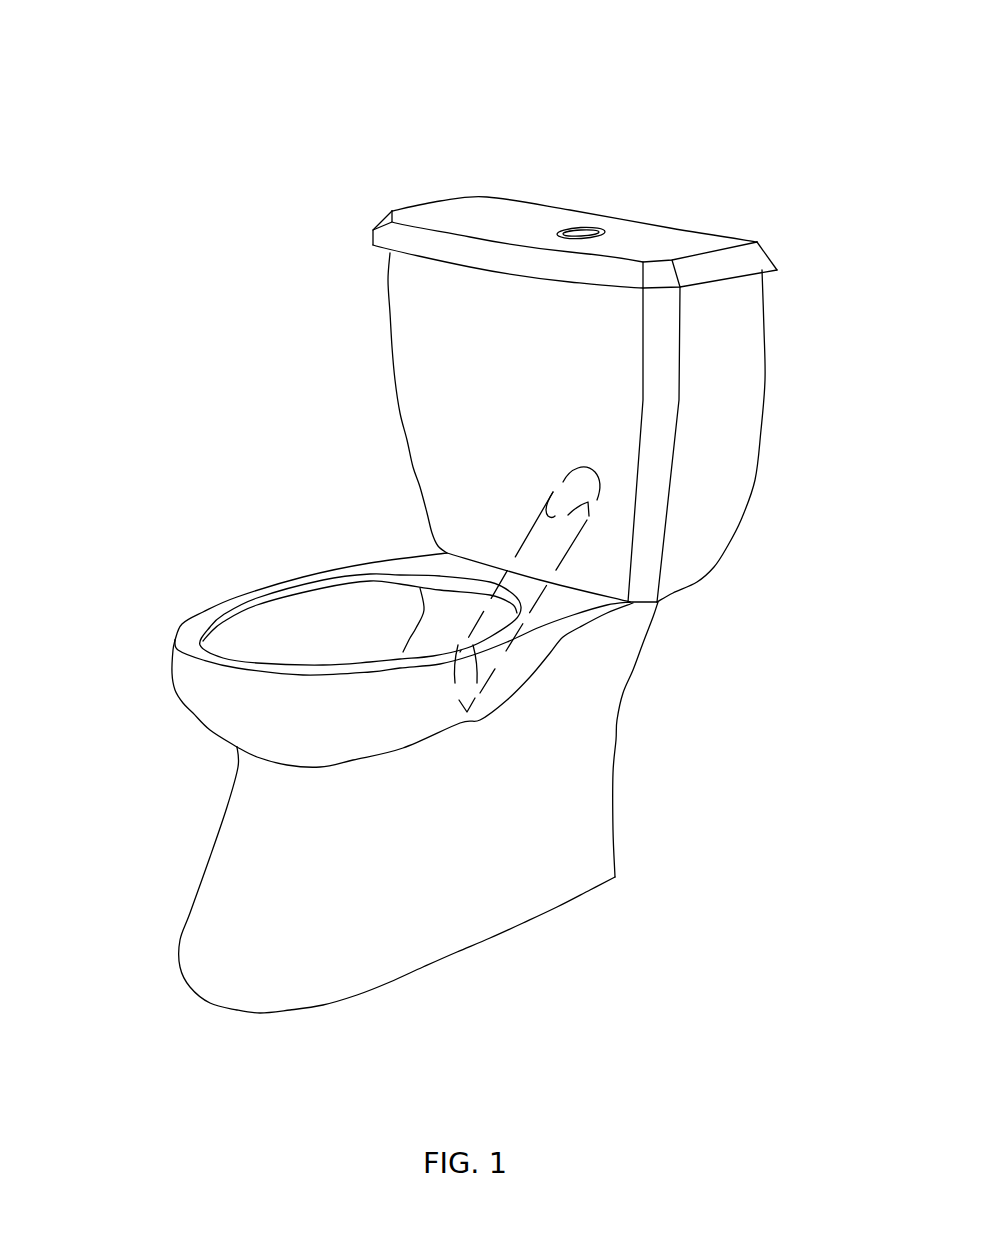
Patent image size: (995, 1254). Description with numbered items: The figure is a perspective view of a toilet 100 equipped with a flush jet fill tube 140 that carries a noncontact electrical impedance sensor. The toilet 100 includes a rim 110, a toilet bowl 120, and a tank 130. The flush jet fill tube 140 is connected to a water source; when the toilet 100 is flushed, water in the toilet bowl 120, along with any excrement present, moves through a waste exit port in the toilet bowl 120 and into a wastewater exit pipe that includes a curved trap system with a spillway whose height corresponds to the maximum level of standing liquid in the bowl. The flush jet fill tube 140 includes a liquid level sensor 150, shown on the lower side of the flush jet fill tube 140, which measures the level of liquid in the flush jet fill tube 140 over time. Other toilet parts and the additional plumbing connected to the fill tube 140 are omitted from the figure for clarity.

The toilet 100 is at (136, 58).
The rim 110 is at (213, 627).
The toilet bowl 120 is at (317, 608).
The tank 130 is at (743, 400).
The flush jet fill tube 140 is at (427, 767).
The liquid level sensor 150 is at (583, 518).